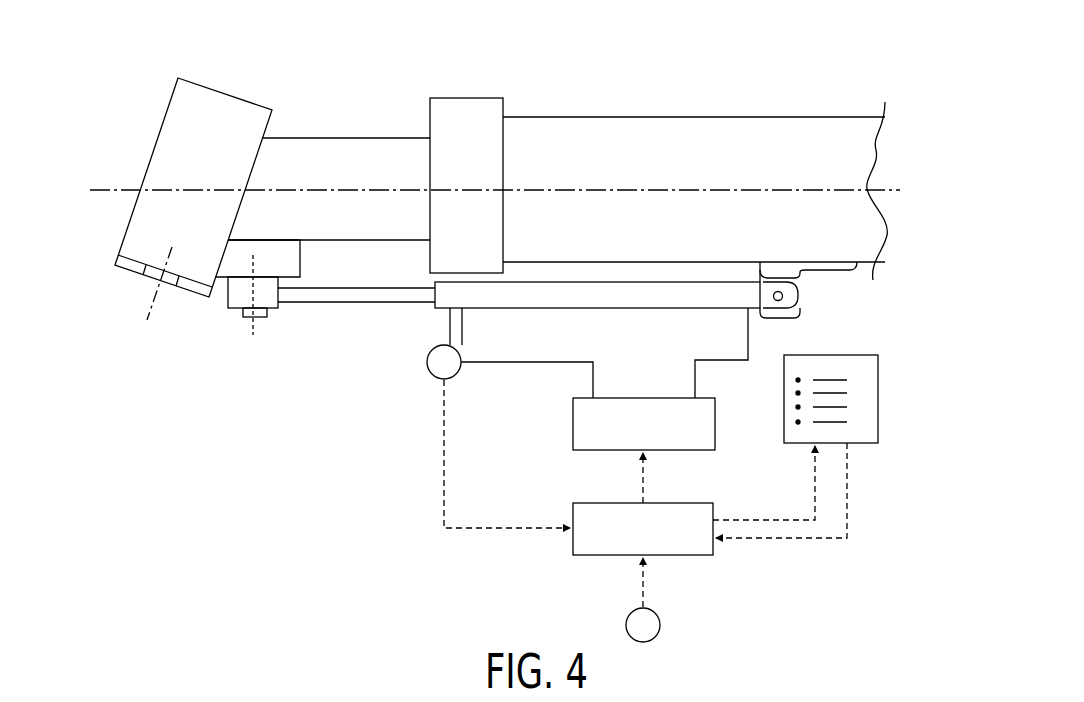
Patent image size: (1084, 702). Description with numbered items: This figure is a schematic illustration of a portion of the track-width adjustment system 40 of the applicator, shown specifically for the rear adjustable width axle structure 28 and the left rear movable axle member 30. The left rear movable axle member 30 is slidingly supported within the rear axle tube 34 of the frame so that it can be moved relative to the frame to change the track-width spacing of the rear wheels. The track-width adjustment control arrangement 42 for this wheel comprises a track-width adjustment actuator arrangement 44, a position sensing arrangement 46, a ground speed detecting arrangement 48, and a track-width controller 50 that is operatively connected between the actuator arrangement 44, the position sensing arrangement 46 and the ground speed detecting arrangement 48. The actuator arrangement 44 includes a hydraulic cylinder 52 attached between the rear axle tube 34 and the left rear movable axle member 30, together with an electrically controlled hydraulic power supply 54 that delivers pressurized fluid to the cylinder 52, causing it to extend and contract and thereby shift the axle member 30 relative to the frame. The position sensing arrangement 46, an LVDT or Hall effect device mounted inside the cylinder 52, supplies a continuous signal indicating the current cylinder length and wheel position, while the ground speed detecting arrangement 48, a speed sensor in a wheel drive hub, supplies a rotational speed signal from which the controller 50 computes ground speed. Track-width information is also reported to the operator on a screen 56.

The track-width adjustment system 40 is at (897, 75).
The left rear movable axle member 30 is at (228, 92).
The rear adjustable width axle structure 28 is at (712, 134).
The rear axle tube 34 is at (824, 134).
The track-width adjustment control arrangement 42 is at (220, 300).
The track-width adjustment actuator arrangement 44 is at (781, 340).
The position sensing arrangement 46 is at (428, 352).
The ground speed detecting arrangement 48 is at (630, 612).
The track-width controller 50 is at (673, 503).
The hydraulic cylinder 52 is at (613, 302).
The hydraulic power supply 54 is at (620, 397).
The screen 56 is at (878, 397).